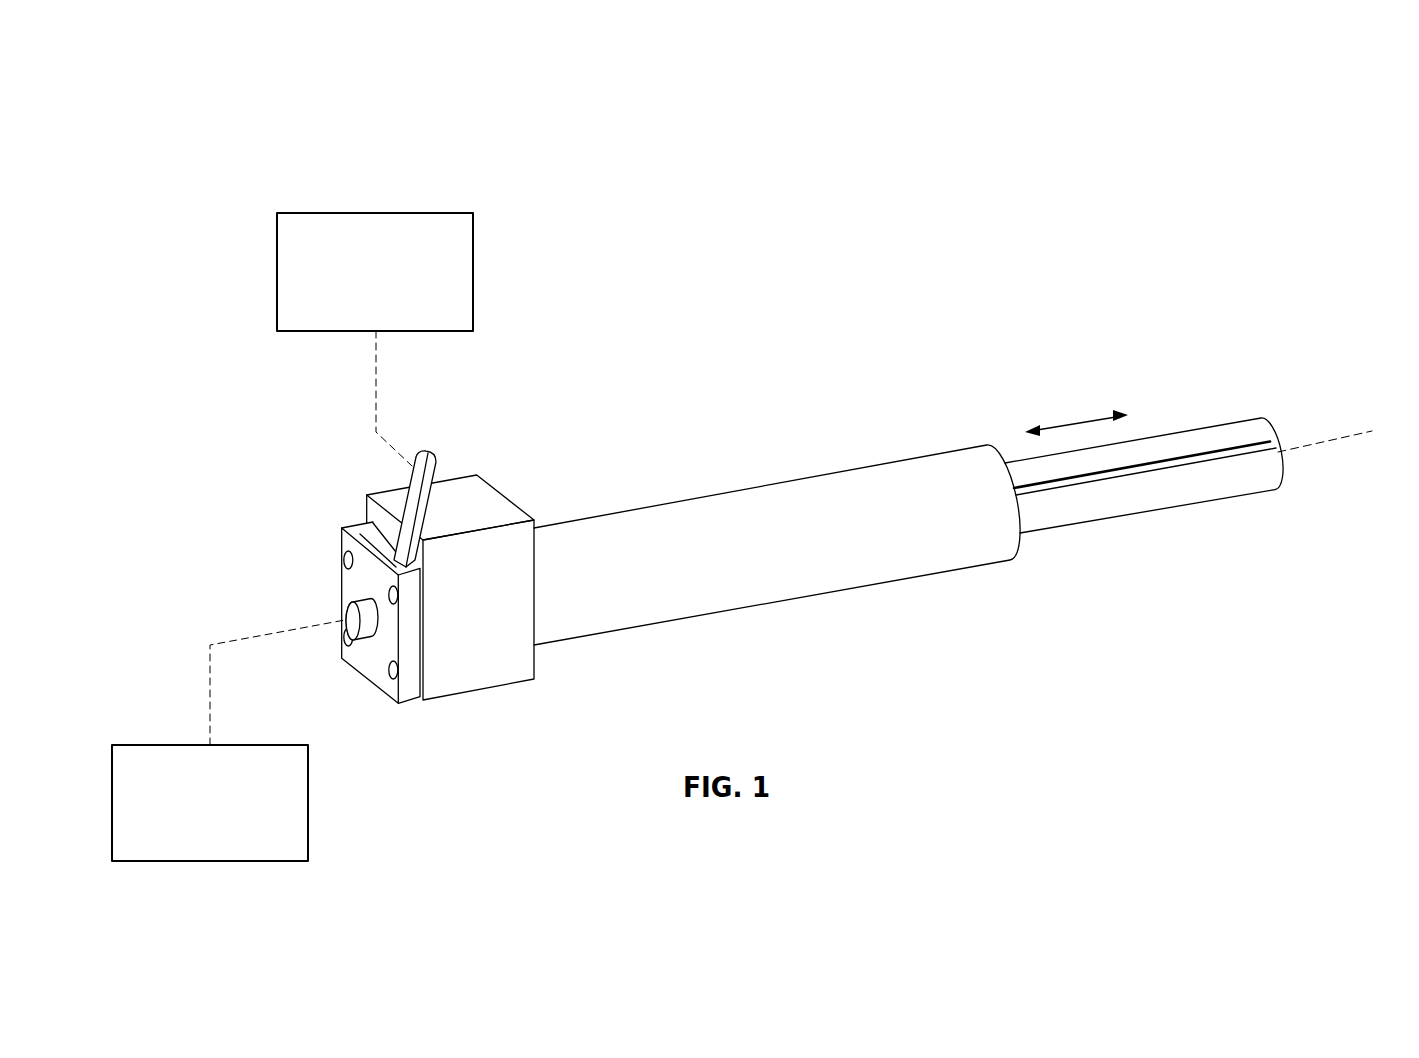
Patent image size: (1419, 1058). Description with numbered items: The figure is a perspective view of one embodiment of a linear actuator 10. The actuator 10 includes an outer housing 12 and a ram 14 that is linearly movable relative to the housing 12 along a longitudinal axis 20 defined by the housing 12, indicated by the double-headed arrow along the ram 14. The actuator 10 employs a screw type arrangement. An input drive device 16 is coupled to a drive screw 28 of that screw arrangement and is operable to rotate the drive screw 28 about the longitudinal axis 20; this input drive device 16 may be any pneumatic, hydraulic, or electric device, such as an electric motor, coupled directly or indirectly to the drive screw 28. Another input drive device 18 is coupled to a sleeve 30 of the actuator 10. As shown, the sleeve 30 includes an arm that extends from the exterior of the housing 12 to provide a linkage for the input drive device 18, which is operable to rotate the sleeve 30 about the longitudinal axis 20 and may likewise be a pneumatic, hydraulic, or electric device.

The actuator 10 is at (1070, 155).
The outer housing 12 is at (805, 473).
The ram 14 is at (1208, 427).
The input drive device 16 is at (308, 838).
The input drive device 18 is at (473, 238).
The longitudinal axis 20 is at (1342, 437).
The drive screw 28 is at (347, 596).
The sleeve 30 is at (436, 464).